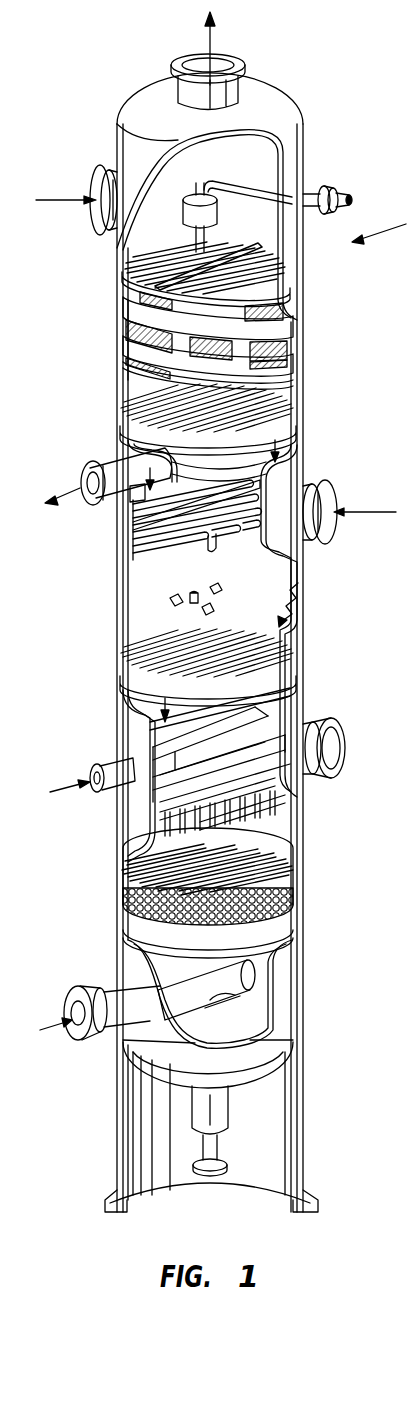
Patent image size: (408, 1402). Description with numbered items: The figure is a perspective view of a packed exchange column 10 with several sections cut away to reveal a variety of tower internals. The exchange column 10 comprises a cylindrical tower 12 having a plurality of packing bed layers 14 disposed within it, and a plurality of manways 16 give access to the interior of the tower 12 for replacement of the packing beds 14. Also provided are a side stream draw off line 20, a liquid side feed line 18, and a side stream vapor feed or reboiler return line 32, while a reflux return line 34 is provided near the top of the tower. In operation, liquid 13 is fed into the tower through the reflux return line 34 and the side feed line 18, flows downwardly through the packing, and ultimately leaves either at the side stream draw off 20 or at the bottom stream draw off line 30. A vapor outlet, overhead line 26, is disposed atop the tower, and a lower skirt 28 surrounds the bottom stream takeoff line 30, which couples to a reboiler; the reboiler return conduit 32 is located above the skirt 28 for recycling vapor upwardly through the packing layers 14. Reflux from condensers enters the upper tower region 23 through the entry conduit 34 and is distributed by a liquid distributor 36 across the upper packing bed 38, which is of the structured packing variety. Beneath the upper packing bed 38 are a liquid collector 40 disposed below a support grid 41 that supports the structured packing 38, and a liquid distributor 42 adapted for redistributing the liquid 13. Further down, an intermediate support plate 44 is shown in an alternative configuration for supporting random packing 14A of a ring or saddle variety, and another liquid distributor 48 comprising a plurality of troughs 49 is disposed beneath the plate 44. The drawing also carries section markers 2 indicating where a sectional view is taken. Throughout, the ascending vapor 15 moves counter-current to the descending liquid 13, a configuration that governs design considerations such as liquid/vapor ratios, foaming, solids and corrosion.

The exchange column 10 is at (357, 63).
The cylindrical tower 12 is at (302, 150).
The liquid 13 is at (64, 516).
The packing bed layers 14 is at (295, 330).
The random packing 14A is at (169, 603).
The ascending vapor 15 is at (212, 37).
The manways 16 is at (95, 178).
The liquid side feed line 18 is at (108, 763).
The side stream draw off line 20 is at (110, 462).
The section line 2 is at (212, 472).
The upper tower region 23 is at (122, 348).
The overhead line 26 is at (246, 60).
The lower skirt 28 is at (290, 1153).
The bottom stream draw off line 30 is at (226, 1112).
The reboiler return line 32 is at (112, 995).
The reflux return line 34 is at (310, 197).
The liquid distributor 36 is at (150, 256).
The upper packing bed 38 is at (126, 336).
The liquid collector 40 is at (290, 405).
The support grid 41 is at (295, 350).
The liquid distributor 42 is at (130, 543).
The intermediate support plate 44 is at (134, 640).
The liquid distributor 48 is at (300, 800).
The troughs 49 is at (300, 828).